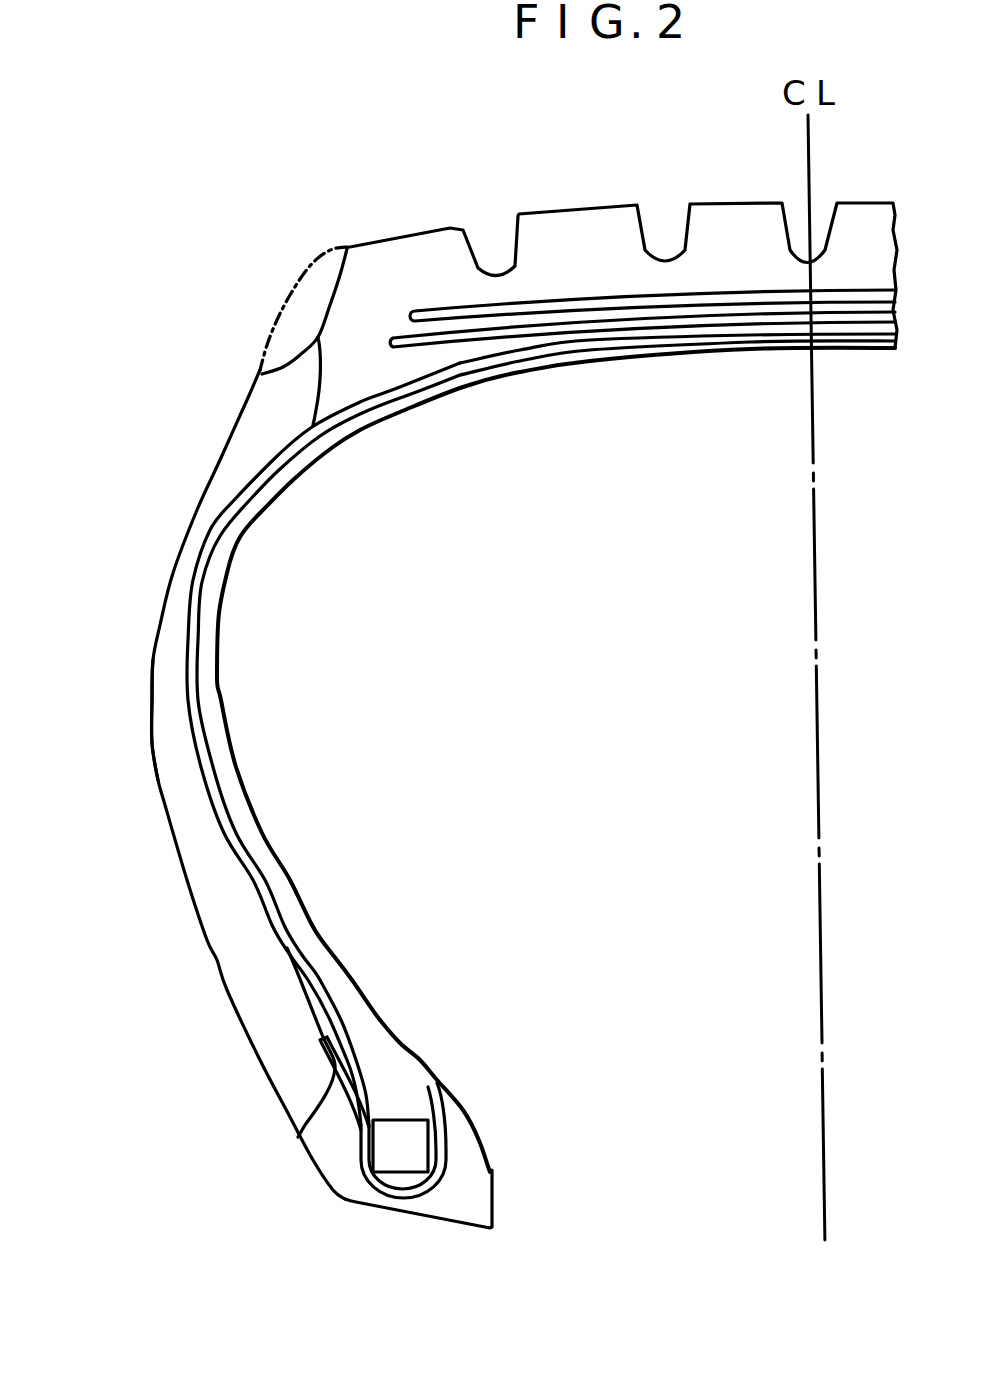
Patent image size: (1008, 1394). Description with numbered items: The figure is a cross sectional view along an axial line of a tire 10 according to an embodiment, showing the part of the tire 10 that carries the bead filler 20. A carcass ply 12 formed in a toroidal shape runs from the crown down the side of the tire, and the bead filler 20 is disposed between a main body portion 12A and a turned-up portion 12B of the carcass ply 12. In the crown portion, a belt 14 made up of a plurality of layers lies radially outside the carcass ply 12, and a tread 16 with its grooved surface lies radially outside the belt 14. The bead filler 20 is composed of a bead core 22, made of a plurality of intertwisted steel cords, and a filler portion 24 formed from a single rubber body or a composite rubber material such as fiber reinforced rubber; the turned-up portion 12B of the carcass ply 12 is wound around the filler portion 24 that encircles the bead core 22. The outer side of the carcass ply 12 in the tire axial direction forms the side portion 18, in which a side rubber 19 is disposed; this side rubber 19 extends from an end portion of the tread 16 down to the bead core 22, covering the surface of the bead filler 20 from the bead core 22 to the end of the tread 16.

The tire 10 is at (260, 230).
The carcass ply 12 is at (136, 1007).
The main body portion 12A is at (271, 918).
The turned-up portion 12B is at (347, 1140).
The belt 14 is at (543, 297).
The tread 16 is at (413, 252).
The side portion 18 is at (180, 884).
The side rubber 19 is at (160, 743).
The bead filler 20 is at (592, 1075).
The bead core 22 is at (412, 1155).
The filler portion 24 is at (405, 1108).